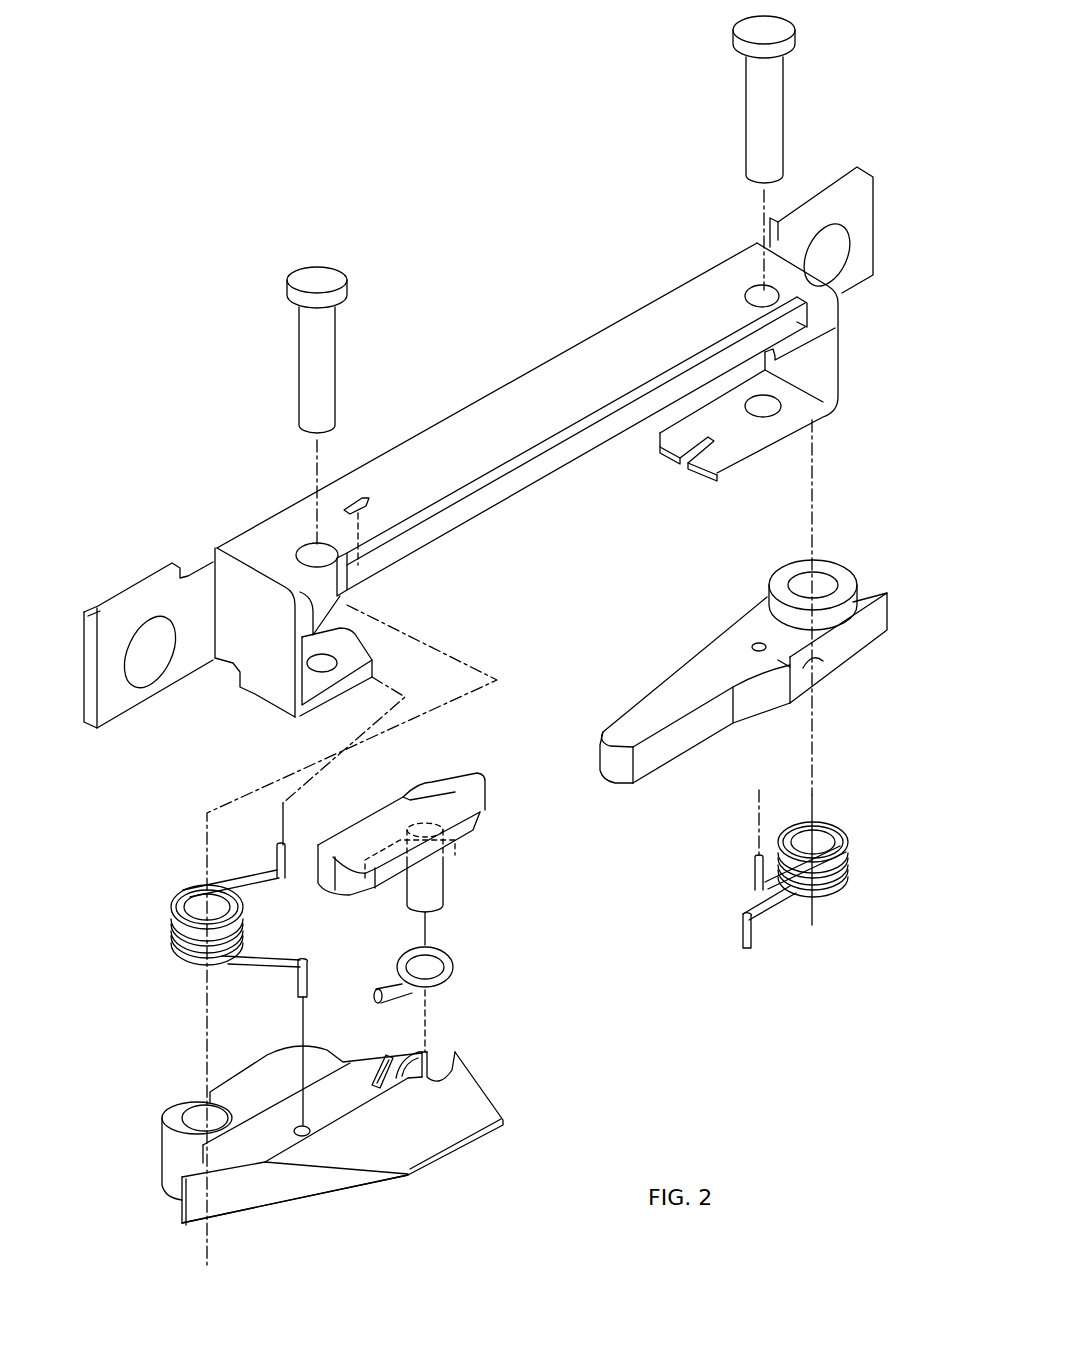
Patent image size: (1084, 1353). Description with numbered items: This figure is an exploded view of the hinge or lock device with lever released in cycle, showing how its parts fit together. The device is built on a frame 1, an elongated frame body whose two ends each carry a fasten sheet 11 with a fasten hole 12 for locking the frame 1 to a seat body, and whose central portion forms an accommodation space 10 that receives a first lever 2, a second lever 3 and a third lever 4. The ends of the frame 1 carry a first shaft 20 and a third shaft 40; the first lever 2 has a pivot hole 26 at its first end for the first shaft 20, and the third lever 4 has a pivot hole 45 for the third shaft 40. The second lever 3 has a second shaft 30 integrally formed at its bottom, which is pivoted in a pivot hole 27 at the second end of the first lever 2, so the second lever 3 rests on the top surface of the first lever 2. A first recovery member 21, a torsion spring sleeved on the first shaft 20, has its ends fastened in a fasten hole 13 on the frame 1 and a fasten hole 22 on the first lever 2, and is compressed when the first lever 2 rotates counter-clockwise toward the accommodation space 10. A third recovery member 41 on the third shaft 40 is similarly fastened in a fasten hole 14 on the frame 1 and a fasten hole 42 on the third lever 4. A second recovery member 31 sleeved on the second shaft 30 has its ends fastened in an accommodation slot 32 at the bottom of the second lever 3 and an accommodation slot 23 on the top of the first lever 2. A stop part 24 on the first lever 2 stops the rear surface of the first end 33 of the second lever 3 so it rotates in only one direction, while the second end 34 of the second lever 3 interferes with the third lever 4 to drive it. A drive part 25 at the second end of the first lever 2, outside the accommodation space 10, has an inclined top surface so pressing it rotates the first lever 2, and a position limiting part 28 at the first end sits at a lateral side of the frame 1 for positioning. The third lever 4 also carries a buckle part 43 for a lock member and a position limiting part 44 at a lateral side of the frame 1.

The frame 1 is at (578, 363).
The accommodation space 10 is at (517, 511).
The fasten sheet 11 is at (163, 598).
The fasten hole 12 is at (143, 652).
The fasten hole 13 is at (348, 505).
The fasten hole 14 is at (702, 448).
The first shaft 20 is at (317, 351).
The first recovery member 21 is at (172, 936).
The first lever 2 is at (275, 1073).
The fasten hole 22 is at (302, 1134).
The accommodation slot 23 is at (388, 1068).
The stop part 24 is at (263, 1120).
The drive part 25 is at (425, 1135).
The pivot hole 26 is at (195, 1118).
The pivot hole 27 is at (435, 1065).
The position limiting part 28 is at (182, 1220).
The second lever 3 is at (460, 808).
The second shaft 30 is at (432, 880).
The second recovery member 31 is at (447, 962).
The accommodation slot 32 is at (393, 877).
The first end 33 is at (343, 845).
The second end 34 is at (457, 780).
The third lever 4 is at (672, 693).
The third shaft 40 is at (762, 103).
The third recovery member 41 is at (833, 835).
The fasten hole 42 is at (752, 645).
The buckle part 43 is at (823, 663).
The position limiting part 44 is at (880, 617).
The pivot hole 45 is at (823, 583).